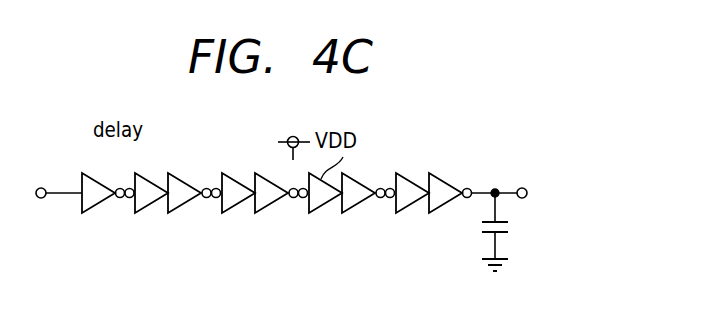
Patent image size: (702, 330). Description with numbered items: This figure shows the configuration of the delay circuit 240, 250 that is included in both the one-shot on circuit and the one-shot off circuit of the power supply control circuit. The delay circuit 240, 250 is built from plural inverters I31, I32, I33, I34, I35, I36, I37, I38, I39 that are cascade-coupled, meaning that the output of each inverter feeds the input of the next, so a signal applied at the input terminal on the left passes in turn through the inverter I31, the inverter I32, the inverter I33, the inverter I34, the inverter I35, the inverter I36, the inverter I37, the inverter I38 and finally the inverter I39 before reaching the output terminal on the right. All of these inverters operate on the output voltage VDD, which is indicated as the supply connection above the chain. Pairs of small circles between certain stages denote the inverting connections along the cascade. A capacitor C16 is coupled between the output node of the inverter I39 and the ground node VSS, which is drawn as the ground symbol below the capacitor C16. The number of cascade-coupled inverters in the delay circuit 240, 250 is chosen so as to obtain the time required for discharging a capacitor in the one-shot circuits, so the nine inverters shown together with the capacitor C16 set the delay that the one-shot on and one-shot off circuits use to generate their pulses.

The delay circuit 240 is at (276, 191).
The delay circuit 250 is at (252, 143).
The inverter I31 is at (97, 203).
The inverter I32 is at (150, 203).
The inverter I33 is at (183, 203).
The inverter I34 is at (237, 203).
The inverter I35 is at (270, 203).
The inverter I36 is at (324, 203).
The inverter I37 is at (357, 203).
The inverter I38 is at (411, 203).
The inverter I39 is at (444, 203).
The capacitor C16 is at (505, 235).